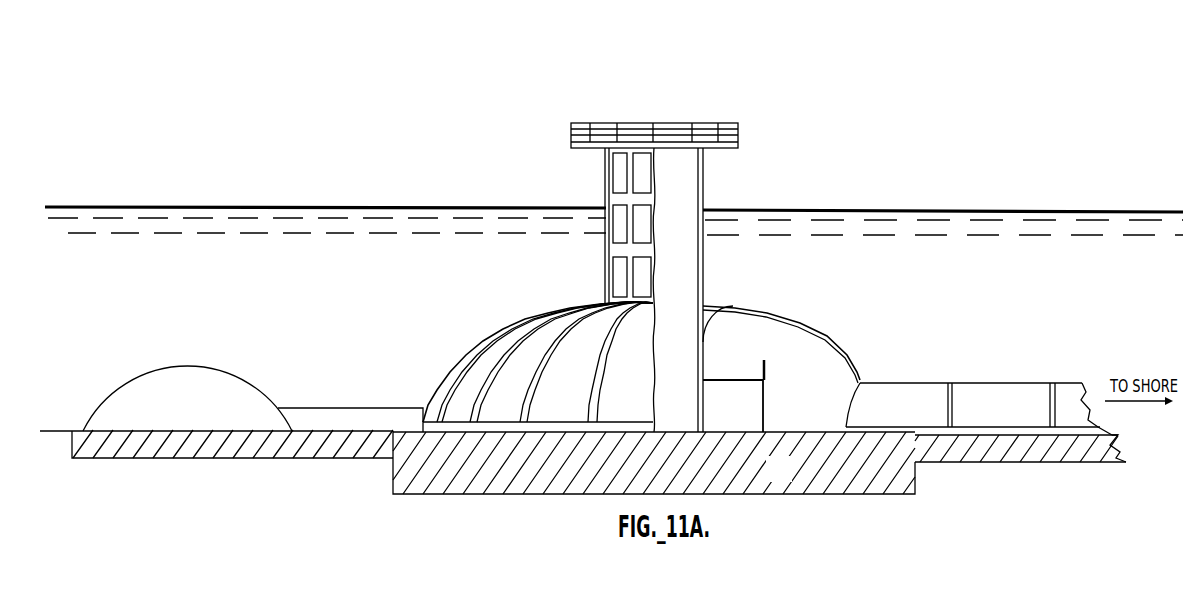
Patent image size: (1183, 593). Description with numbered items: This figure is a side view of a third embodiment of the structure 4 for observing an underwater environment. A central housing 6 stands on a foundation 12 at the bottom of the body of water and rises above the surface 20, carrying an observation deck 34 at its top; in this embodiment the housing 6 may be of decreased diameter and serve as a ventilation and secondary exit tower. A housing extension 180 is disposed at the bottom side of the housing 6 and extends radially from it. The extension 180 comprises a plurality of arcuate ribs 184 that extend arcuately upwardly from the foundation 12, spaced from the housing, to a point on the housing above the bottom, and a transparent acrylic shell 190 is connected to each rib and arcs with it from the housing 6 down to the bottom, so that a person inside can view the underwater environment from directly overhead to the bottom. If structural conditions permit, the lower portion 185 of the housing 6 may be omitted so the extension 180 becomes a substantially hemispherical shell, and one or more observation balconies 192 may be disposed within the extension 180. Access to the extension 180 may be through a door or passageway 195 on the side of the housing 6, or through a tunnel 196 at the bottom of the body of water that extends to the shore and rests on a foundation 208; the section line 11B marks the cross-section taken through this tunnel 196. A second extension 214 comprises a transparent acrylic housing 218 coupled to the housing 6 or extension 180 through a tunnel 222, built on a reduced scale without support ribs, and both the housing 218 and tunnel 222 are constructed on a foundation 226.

The structure 4 is at (641, 255).
The observation deck 34 is at (720, 124).
The housing 6 is at (705, 198).
The surface 20 is at (551, 207).
The transparent acrylic shell 190 is at (575, 317).
The arcuate ribs 184 is at (545, 361).
The lower portion 185 is at (716, 322).
The housing extension 180 is at (826, 338).
The observation balconies 192 is at (730, 378).
The door or passageway 195 is at (705, 421).
The tunnel 196 is at (880, 383).
The housing 218 is at (146, 373).
The second extension 214 is at (253, 385).
The tunnel 222 is at (388, 408).
The foundation 226 is at (237, 461).
The foundation 12 is at (787, 479).
The foundation 208 is at (938, 463).
The section line 11B is at (1020, 488).